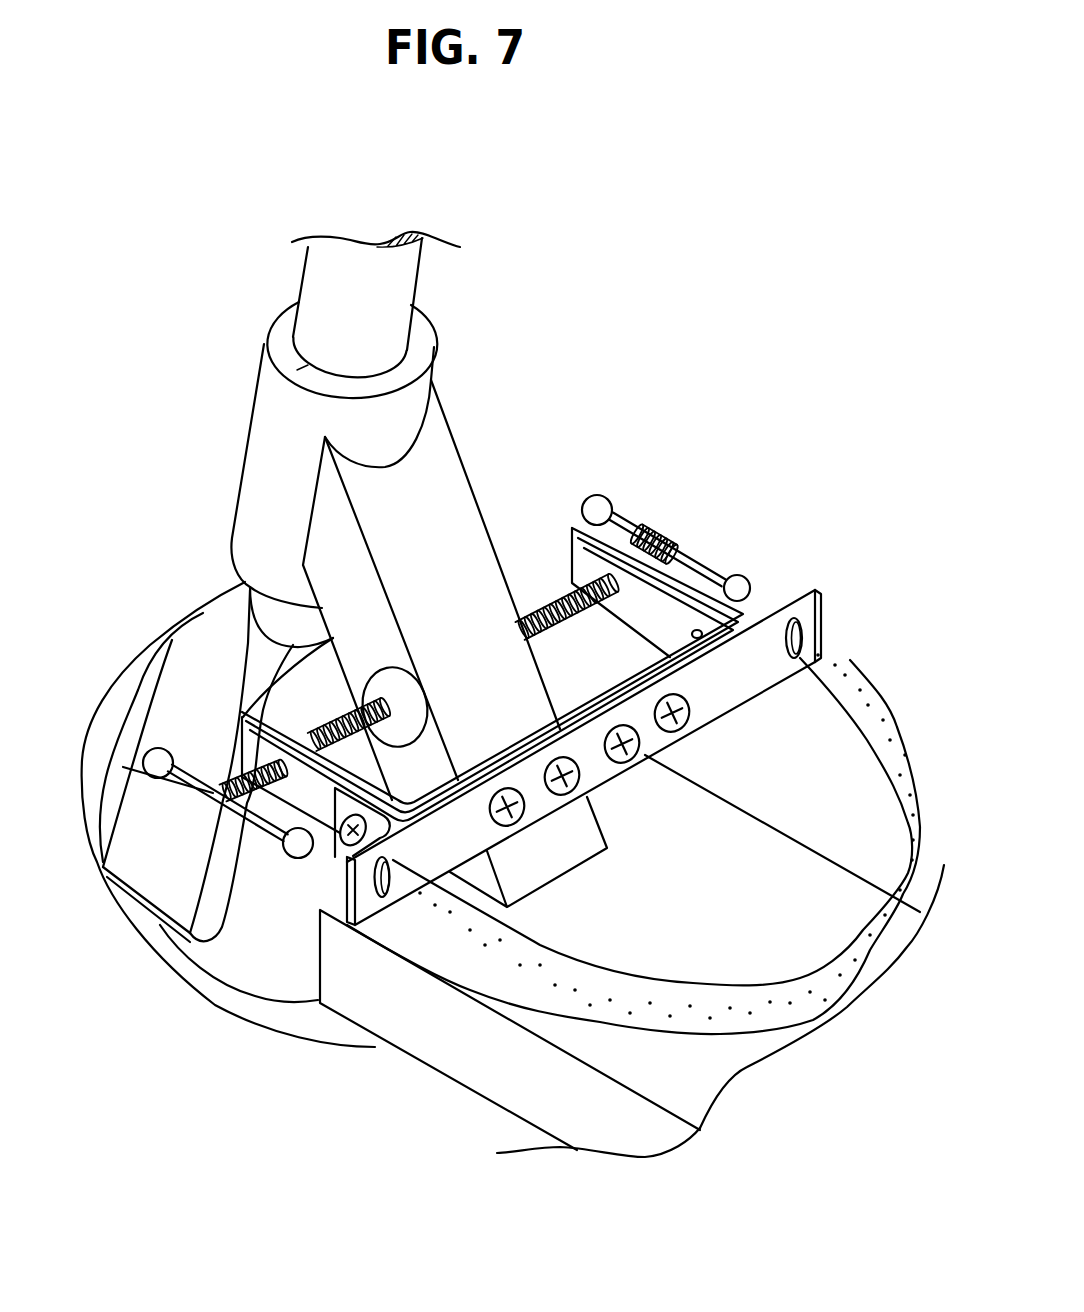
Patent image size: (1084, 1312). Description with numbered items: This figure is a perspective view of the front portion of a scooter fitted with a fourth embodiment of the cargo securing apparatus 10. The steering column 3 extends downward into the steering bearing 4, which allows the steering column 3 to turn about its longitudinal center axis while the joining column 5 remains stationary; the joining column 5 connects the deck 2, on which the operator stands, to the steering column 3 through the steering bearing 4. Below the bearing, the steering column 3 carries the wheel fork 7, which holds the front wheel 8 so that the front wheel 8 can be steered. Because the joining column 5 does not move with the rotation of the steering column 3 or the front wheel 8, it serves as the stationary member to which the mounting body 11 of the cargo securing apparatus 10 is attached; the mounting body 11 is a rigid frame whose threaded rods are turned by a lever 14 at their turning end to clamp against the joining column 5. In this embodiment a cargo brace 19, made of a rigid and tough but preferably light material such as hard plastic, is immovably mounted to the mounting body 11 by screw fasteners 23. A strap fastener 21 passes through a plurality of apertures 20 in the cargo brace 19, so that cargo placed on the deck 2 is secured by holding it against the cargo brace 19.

The deck 2 is at (515, 1020).
The steering column 3 is at (408, 282).
The steering bearing 4 is at (256, 464).
The joining column 5 is at (433, 507).
The wheel fork 7 is at (143, 868).
The front wheel 8 is at (237, 987).
The cargo securing apparatus 10 is at (753, 480).
The mounting body 11 is at (677, 578).
The lever 14 is at (612, 507).
The cargo brace 19 is at (728, 689).
The apertures 20 is at (373, 897).
The strap fastener 21 is at (698, 1037).
The screw fasteners 23 is at (636, 748).